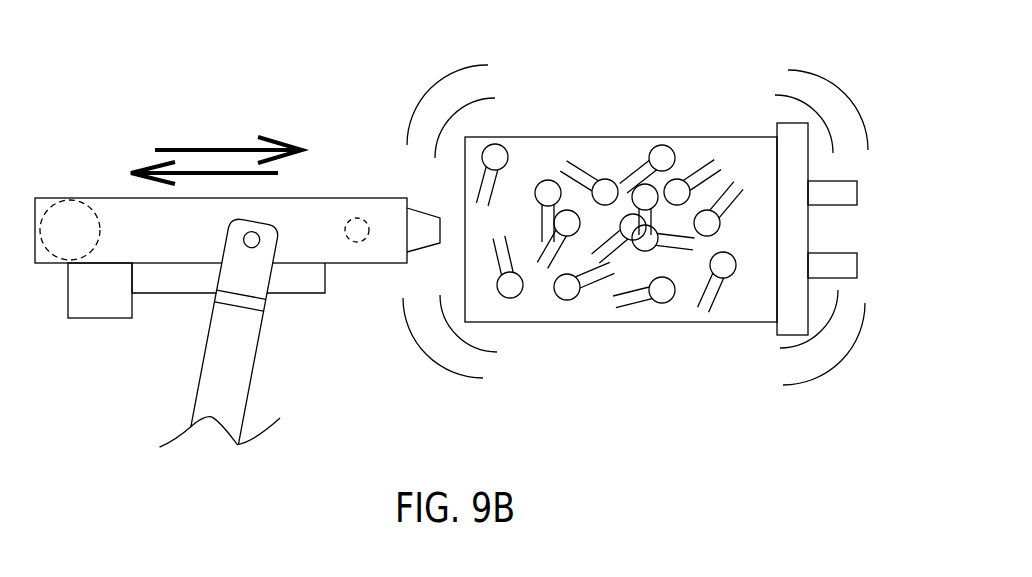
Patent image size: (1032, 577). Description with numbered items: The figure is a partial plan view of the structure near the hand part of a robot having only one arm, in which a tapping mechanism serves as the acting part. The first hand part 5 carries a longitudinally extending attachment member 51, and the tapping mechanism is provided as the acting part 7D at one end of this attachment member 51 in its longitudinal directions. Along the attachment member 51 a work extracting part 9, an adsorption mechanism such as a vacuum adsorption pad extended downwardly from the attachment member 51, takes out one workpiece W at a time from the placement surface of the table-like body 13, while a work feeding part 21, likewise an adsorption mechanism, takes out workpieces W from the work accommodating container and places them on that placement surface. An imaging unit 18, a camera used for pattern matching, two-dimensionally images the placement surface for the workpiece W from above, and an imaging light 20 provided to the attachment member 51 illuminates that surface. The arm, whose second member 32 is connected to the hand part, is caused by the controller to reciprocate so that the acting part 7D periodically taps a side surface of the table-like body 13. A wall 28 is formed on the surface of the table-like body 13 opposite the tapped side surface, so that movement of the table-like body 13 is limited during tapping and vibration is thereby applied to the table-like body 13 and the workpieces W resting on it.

The first hand part 5 is at (206, 139).
The acting part 7D is at (420, 220).
The work extracting part 9 is at (362, 243).
The table-like body 13 is at (593, 150).
The imaging unit 18 is at (103, 305).
The imaging light 20 is at (176, 296).
The work feeding part 21 is at (70, 225).
The wall 28 is at (798, 225).
The second member 32 is at (237, 368).
The attachment member 51 is at (308, 198).
The workpiece W is at (593, 292).